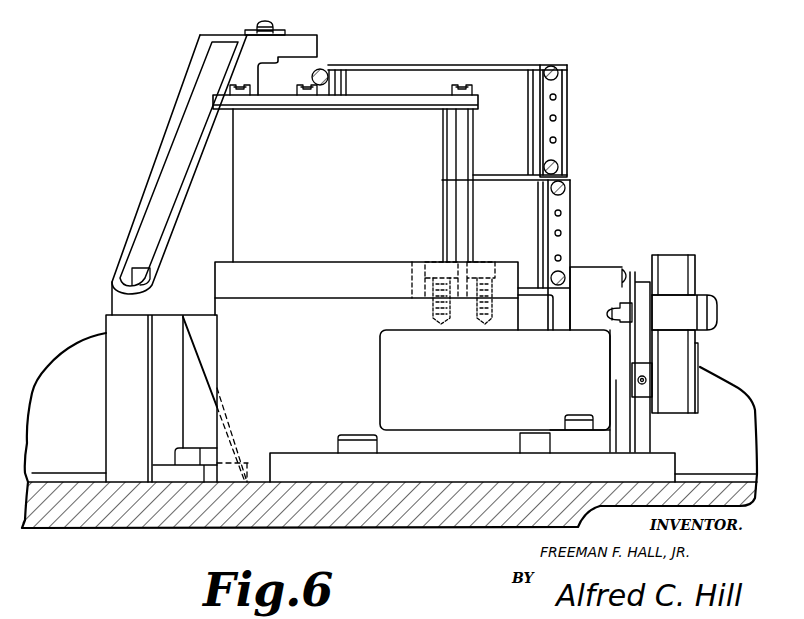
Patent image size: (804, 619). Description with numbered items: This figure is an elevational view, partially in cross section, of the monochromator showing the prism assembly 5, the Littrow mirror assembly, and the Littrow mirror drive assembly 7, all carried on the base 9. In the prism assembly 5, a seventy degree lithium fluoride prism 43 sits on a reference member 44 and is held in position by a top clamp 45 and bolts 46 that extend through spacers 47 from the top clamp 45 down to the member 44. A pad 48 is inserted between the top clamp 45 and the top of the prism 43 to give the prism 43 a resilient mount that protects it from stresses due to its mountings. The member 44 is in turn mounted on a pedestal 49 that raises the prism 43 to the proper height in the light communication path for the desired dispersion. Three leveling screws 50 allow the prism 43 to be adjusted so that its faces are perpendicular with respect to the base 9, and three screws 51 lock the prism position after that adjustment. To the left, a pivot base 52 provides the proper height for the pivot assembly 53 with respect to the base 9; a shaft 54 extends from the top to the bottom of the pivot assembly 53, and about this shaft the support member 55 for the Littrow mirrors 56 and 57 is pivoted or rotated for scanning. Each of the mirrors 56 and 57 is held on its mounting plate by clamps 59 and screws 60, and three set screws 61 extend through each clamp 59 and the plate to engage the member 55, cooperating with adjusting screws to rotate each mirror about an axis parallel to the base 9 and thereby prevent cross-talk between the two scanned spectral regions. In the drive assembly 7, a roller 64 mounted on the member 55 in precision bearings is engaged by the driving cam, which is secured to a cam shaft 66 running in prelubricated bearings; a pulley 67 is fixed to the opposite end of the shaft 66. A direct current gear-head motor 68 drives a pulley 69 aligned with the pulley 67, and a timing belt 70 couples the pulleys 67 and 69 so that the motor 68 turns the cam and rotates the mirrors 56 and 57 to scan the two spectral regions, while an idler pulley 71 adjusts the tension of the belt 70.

The prism assembly 5 is at (215, 167).
The Littrow mirror drive assembly 7 is at (707, 316).
The base 9 is at (462, 520).
The lithium fluoride prism 43 is at (252, 205).
The reference member 44 is at (227, 262).
The top clamp 45 is at (420, 94).
The bolts 46 is at (302, 88).
The spacers 47 is at (473, 152).
The pad 48 is at (350, 112).
The pedestal 49 is at (227, 308).
The leveling screws 50 is at (420, 267).
The locking screws 51 is at (485, 267).
The pivot base 52 is at (107, 325).
The pivot assembly 53 is at (312, 38).
The shaft 54 is at (270, 23).
The support member 55 is at (492, 65).
The Littrow mirror 56 is at (520, 77).
The Littrow mirror 57 is at (508, 188).
The clamps 59 is at (343, 69).
The screws 60 is at (323, 70).
The set screws 61 is at (556, 140).
The roller 64 is at (540, 315).
The cam shaft 66 is at (623, 274).
The pulley 67 is at (695, 273).
The driving motor 68 is at (383, 388).
The pulley 69 is at (698, 357).
The timing belt 70 is at (675, 260).
The idler pulley 71 is at (718, 310).